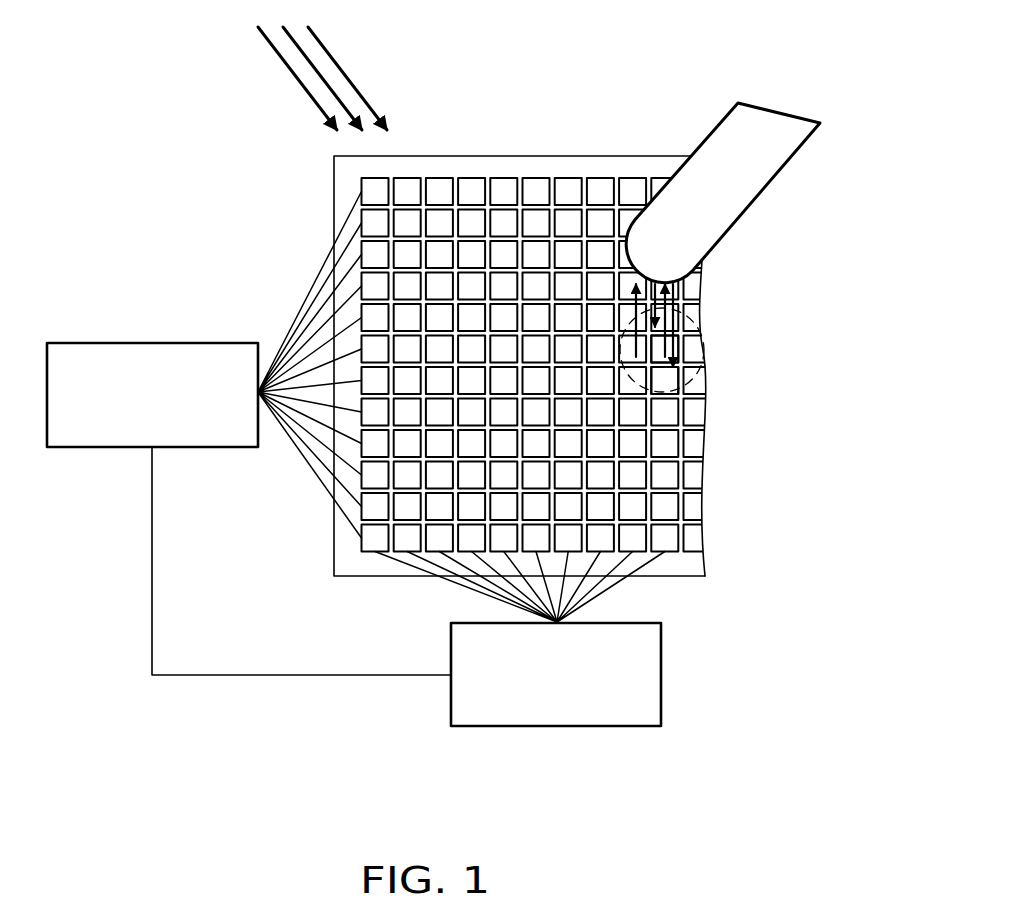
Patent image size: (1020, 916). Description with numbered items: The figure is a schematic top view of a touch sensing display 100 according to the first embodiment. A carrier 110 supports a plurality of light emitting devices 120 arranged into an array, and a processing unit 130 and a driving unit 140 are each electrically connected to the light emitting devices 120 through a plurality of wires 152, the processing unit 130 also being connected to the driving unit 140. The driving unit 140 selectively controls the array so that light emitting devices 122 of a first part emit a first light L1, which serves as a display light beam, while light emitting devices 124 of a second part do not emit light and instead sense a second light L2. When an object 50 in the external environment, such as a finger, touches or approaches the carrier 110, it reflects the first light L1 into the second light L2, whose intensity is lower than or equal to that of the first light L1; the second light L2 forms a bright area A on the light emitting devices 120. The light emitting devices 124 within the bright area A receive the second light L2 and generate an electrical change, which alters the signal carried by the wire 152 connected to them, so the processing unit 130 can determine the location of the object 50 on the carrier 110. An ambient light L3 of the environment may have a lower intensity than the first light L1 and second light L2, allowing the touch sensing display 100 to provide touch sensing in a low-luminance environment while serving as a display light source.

The touch sensing display 100 is at (801, 762).
The carrier 110 is at (352, 570).
The light emitting devices 120 is at (585, 365).
The light emitting devices of a first part 122 is at (632, 350).
The light emitting devices of a second part 124 is at (660, 388).
The processing unit 130 is at (158, 352).
The driving unit 140 is at (648, 677).
The wires 152 is at (306, 298).
The object 50 is at (723, 208).
The bright area A is at (678, 400).
The first light L1 is at (657, 313).
The second light L2 is at (675, 292).
The ambient light L3 is at (353, 79).